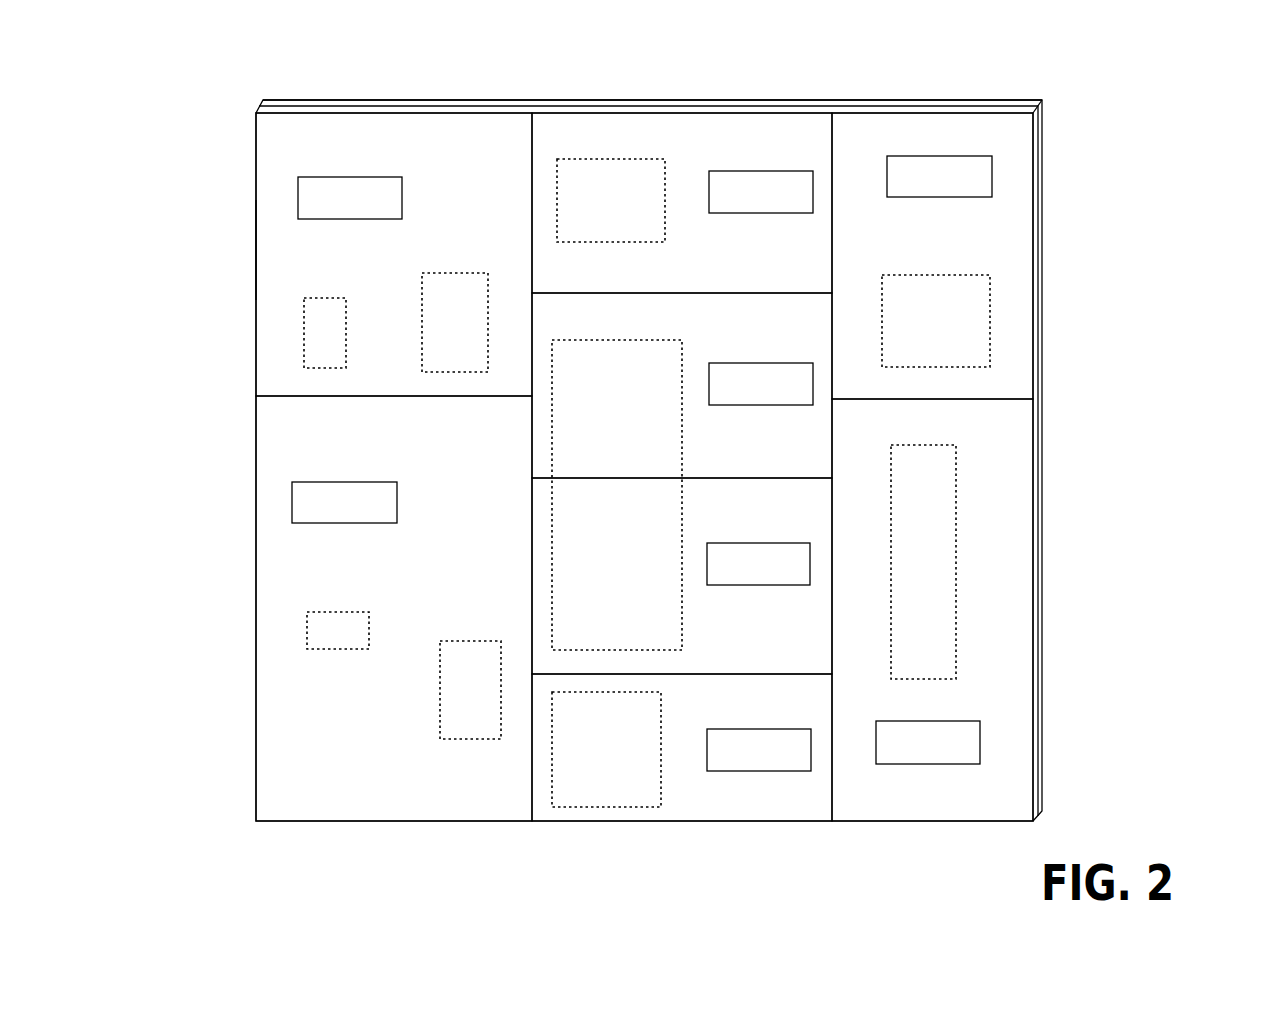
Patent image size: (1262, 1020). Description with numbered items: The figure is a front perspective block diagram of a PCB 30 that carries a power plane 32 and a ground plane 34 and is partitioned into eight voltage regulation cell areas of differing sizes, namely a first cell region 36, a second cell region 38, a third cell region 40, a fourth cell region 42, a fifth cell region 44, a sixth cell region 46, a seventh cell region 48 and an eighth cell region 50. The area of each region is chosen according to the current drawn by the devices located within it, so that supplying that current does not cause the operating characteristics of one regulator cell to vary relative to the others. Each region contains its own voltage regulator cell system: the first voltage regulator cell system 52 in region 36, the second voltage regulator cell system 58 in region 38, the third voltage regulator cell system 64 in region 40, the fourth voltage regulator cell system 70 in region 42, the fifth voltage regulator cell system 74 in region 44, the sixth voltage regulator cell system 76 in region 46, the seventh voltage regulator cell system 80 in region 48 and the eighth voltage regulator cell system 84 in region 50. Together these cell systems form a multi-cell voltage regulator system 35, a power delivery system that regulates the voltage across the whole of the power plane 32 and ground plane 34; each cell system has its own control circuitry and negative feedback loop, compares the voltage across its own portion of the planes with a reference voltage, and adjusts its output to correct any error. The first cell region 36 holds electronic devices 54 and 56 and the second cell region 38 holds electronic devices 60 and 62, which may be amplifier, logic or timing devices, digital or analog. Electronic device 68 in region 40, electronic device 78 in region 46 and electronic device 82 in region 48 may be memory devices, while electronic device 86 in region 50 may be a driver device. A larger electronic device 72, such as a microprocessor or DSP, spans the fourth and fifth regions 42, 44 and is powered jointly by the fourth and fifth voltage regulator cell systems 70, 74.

The PCB 30 is at (1145, 73).
The power plane 32 is at (256, 113).
The ground plane 34 is at (367, 100).
The multi-cell voltage regulator system 35 is at (275, 252).
The first cell region 36 is at (478, 224).
The second cell region 38 is at (380, 741).
The third cell region 40 is at (718, 267).
The fourth cell region 42 is at (773, 463).
The fifth cell region 44 is at (772, 642).
The sixth cell region 46 is at (765, 813).
The seventh cell region 48 is at (897, 249).
The eighth cell region 50 is at (945, 811).
The first voltage regulator cell system 52 is at (374, 177).
The electronic device 54 is at (462, 273).
The electronic device 56 is at (325, 298).
The second voltage regulator cell system 58 is at (368, 482).
The electronic device 60 is at (340, 612).
The electronic device 62 is at (468, 641).
The third voltage regulator cell system 64 is at (754, 171).
The electronic device 68 is at (600, 159).
The fourth voltage regulator cell system 70 is at (736, 363).
The larger electronic device 72 is at (606, 340).
The fifth voltage regulator cell system 74 is at (749, 543).
The sixth voltage regulator cell system 76 is at (768, 729).
The electronic device 78 is at (661, 712).
The seventh voltage regulator cell system 80 is at (946, 156).
The electronic device 82 is at (928, 275).
The eighth voltage regulator cell system 84 is at (929, 721).
The electronic device 86 is at (928, 445).